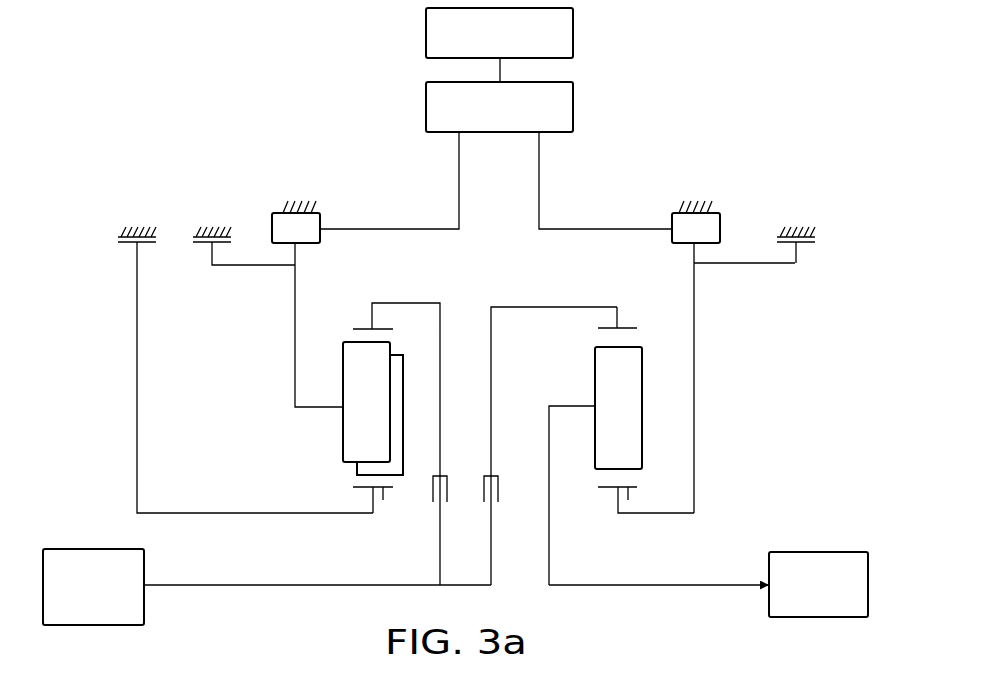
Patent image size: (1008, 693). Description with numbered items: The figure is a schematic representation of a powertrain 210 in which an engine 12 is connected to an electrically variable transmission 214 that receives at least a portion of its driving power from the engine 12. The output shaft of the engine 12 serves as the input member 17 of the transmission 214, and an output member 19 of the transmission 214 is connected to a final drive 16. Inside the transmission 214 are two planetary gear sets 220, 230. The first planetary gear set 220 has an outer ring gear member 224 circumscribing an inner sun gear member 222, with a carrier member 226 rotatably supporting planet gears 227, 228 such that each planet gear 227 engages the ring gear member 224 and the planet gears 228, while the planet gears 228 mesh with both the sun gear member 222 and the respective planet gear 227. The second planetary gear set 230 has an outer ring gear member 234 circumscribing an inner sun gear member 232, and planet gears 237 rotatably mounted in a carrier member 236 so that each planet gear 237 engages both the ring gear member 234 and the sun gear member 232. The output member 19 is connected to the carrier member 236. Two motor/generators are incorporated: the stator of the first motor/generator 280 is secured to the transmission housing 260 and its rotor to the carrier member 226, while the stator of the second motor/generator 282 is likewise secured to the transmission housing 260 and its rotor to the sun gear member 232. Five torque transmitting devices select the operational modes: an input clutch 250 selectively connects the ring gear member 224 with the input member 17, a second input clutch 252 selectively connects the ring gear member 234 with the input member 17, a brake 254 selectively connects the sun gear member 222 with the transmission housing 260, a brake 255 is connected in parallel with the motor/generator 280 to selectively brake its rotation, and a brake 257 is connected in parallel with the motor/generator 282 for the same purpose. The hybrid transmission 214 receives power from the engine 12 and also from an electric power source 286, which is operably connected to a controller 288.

The engine 12 is at (110, 532).
The final drive 16 is at (803, 536).
The input member 17 is at (182, 588).
The output member 19 is at (730, 588).
The powertrain 210 is at (716, 103).
The electrically variable transmission 214 is at (759, 130).
The first planetary gear set 220 is at (362, 491).
The sun gear member 222 is at (383, 491).
The ring gear member 224 is at (385, 326).
The carrier member 226 is at (331, 413).
The planet gears 227 is at (366, 402).
The planet gears 228 is at (405, 379).
The second planetary gear set 230 is at (606, 491).
The sun gear member 232 is at (627, 491).
The ring gear member 234 is at (610, 326).
The carrier member 236 is at (583, 400).
The planet gears 237 is at (618, 408).
The input clutch 250 is at (450, 468).
The input clutch 252 is at (501, 468).
The brake 254 is at (113, 236).
The brake 255 is at (188, 236).
The brake 257 is at (819, 231).
The transmission housing 260 is at (119, 232).
The first motor/generator 280 is at (267, 209).
The second motor/generator 282 is at (726, 211).
The electric power source 286 is at (426, 34).
The controller 288 is at (426, 106).